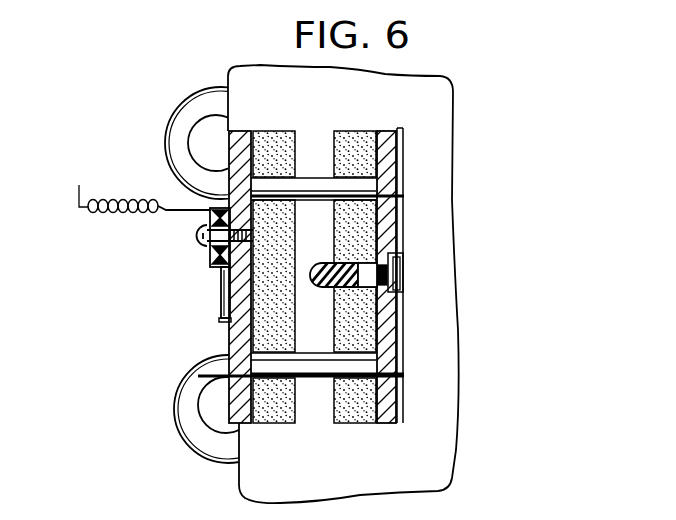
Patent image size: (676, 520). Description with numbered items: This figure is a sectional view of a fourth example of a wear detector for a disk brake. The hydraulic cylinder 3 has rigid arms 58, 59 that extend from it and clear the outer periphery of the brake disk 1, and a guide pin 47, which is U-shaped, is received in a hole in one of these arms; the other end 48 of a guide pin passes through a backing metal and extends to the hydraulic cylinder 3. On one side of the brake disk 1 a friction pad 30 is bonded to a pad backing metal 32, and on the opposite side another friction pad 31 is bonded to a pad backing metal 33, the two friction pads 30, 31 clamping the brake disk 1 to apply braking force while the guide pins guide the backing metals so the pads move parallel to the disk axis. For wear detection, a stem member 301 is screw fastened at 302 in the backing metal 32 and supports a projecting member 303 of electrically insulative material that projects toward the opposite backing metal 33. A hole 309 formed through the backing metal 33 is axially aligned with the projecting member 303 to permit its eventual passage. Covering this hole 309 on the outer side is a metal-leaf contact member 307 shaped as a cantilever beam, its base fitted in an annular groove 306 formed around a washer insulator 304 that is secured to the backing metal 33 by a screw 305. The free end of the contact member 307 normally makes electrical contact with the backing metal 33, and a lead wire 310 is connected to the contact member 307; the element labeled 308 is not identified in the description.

The hydraulic cylinder 3 is at (226, 77).
The rigid arm 58 is at (333, 112).
The rigid arm 59 is at (320, 481).
The brake disk 1 is at (325, 410).
The other end of guide pin 48 is at (178, 122).
The guide pin 47 is at (183, 397).
The pad backing metal 33 is at (242, 410).
The pad backing metal 32 is at (390, 422).
The friction pad 31 is at (280, 422).
The friction pad 30 is at (357, 420).
The screw fastening 302 is at (403, 247).
The stem member 301 is at (372, 273).
The projecting member 303 is at (347, 278).
The lead wire 310 is at (136, 186).
The annular groove 306 is at (210, 212).
The screw 305 is at (205, 233).
The washer insulator 304 is at (213, 257).
The hole 309 is at (220, 283).
The metal-leaf contact member 307 is at (227, 303).
The foot 308 is at (230, 322).